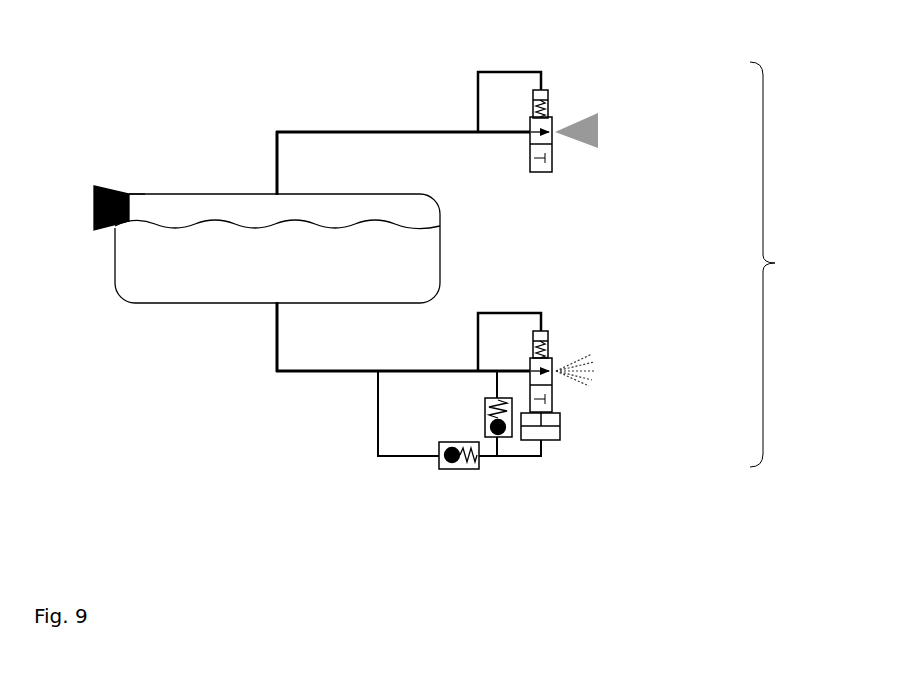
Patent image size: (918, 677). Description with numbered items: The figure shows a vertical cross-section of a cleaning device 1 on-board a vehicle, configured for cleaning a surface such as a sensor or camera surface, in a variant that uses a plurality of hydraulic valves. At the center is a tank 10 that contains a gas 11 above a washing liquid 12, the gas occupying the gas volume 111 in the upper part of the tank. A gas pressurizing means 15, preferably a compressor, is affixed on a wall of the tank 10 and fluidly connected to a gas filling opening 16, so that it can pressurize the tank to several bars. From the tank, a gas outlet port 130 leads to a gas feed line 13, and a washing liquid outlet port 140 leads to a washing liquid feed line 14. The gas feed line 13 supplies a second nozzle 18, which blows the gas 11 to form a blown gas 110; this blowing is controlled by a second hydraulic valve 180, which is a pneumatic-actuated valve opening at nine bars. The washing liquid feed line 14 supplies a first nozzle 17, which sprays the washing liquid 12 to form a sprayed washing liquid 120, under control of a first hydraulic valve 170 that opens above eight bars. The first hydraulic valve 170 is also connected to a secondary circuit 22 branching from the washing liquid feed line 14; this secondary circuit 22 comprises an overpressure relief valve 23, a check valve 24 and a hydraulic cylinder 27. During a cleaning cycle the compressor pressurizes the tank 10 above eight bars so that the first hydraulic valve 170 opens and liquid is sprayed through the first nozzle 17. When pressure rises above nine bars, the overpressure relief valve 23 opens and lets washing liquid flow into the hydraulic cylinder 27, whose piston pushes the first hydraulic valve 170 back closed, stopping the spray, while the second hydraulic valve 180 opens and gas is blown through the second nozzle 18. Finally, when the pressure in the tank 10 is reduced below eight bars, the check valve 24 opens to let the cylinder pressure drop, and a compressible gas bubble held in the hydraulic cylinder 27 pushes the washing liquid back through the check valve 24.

The cleaning device 1 is at (785, 264).
The tank 10 is at (278, 237).
The gas 11 is at (205, 207).
The washing liquid 12 is at (152, 292).
The gas feed line 13 is at (372, 127).
The washing liquid feed line 14 is at (339, 382).
The gas pressurizing means 15 is at (87, 178).
The gas filling opening 16 is at (129, 192).
The first nozzle 17 is at (558, 363).
The second nozzle 18 is at (539, 116).
The secondary circuit 22 is at (362, 457).
The overpressure relief valve 23 is at (459, 485).
The check valve 24 is at (473, 413).
The hydraulic cylinder 27 is at (562, 456).
The blown gas 110 is at (597, 110).
The gas volume 111 is at (359, 210).
The sprayed washing liquid 120 is at (606, 342).
The gas outlet port 130 is at (268, 188).
The washing liquid outlet port 140 is at (267, 310).
The first hydraulic valve 170 is at (552, 323).
The second hydraulic valve 180 is at (555, 82).